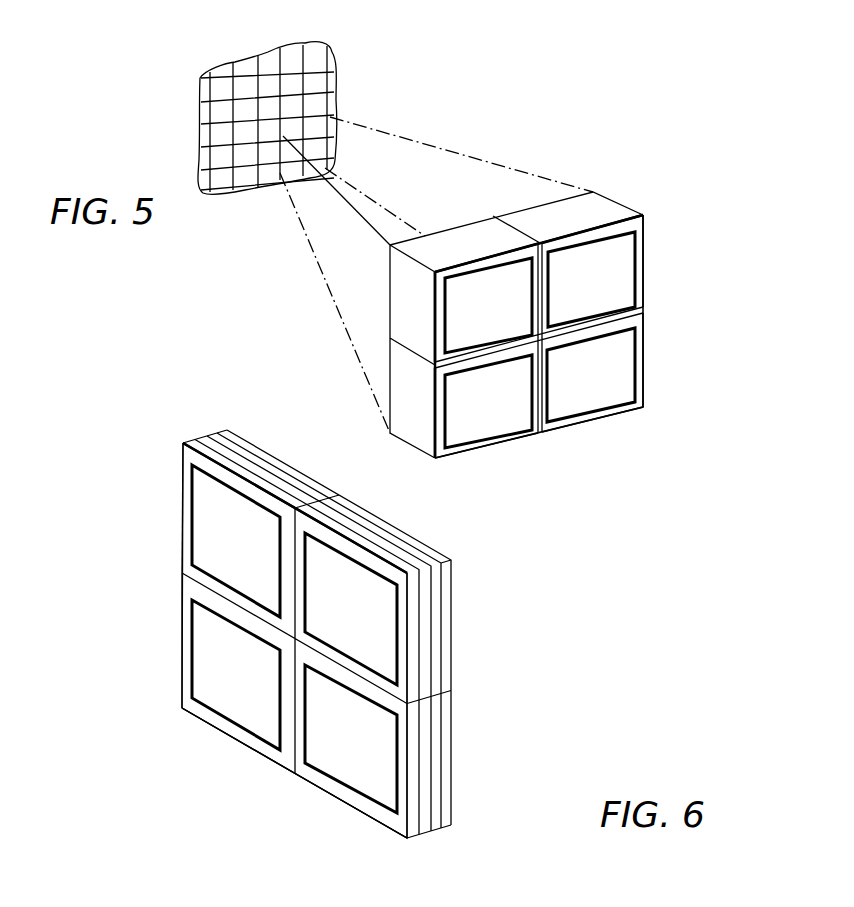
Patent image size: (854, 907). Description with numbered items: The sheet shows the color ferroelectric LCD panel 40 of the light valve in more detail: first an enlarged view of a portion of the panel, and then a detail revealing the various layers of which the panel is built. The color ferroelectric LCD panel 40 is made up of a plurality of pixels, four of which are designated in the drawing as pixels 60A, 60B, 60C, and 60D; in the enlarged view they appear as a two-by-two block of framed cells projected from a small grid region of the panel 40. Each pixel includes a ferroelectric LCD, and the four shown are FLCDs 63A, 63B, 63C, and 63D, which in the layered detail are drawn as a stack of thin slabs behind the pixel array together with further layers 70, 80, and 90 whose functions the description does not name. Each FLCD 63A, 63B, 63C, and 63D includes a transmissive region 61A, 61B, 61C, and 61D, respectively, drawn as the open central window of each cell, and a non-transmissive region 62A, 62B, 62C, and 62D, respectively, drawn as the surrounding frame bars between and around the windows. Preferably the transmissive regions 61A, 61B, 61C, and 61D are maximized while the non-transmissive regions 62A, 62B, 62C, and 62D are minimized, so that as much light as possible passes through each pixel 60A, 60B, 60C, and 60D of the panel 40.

In FIG. 5, the color ferroelectric LCD panel 40 is at (334, 52).
In FIG. 5, the pixel 60A is at (437, 315).
In FIG. 6, the pixel 60A is at (187, 478).
In FIG. 5, the pixel 60B is at (648, 258).
In FIG. 6, the pixel 60B is at (402, 590).
In FIG. 5, the pixel 60C is at (453, 450).
In FIG. 6, the pixel 60C is at (180, 627).
In FIG. 5, the pixel 60D is at (635, 413).
In FIG. 6, the pixel 60D is at (453, 743).
In FIG. 5, the transmissive region 61A is at (478, 287).
In FIG. 6, the transmissive region 61A is at (215, 558).
In FIG. 5, the transmissive region 61B is at (615, 250).
In FIG. 6, the transmissive region 61B is at (385, 625).
In FIG. 5, the transmissive region 61C is at (503, 427).
In FIG. 6, the transmissive region 61C is at (213, 662).
In FIG. 5, the transmissive region 61D is at (587, 405).
In FIG. 6, the transmissive region 61D is at (353, 773).
In FIG. 5, the non-transmissive region 62A is at (437, 287).
In FIG. 6, the non-transmissive region 62A is at (188, 533).
In FIG. 5, the non-transmissive region 62B is at (637, 287).
In FIG. 6, the non-transmissive region 62B is at (360, 550).
In FIG. 5, the non-transmissive region 62C is at (437, 405).
In FIG. 6, the non-transmissive region 62C is at (203, 717).
In FIG. 5, the non-transmissive region 62D is at (640, 368).
In FIG. 6, the non-transmissive region 62D is at (303, 763).
In FIG. 6, the ferroelectric LCD (FLCD) 63A is at (182, 460).
In FIG. 6, the ferroelectric LCD (FLCD) 63B is at (415, 545).
In FIG. 6, the ferroelectric LCD (FLCD) 63C is at (245, 742).
In FIG. 6, the ferroelectric LCD (FLCD) 63D is at (410, 730).
In FIG. 6, the rear layer (backlight) 70 is at (423, 830).
In FIG. 6, the intermediate layer (diffuser) 80 is at (437, 813).
In FIG. 6, the layer adjacent to light guide 90 is at (447, 780).